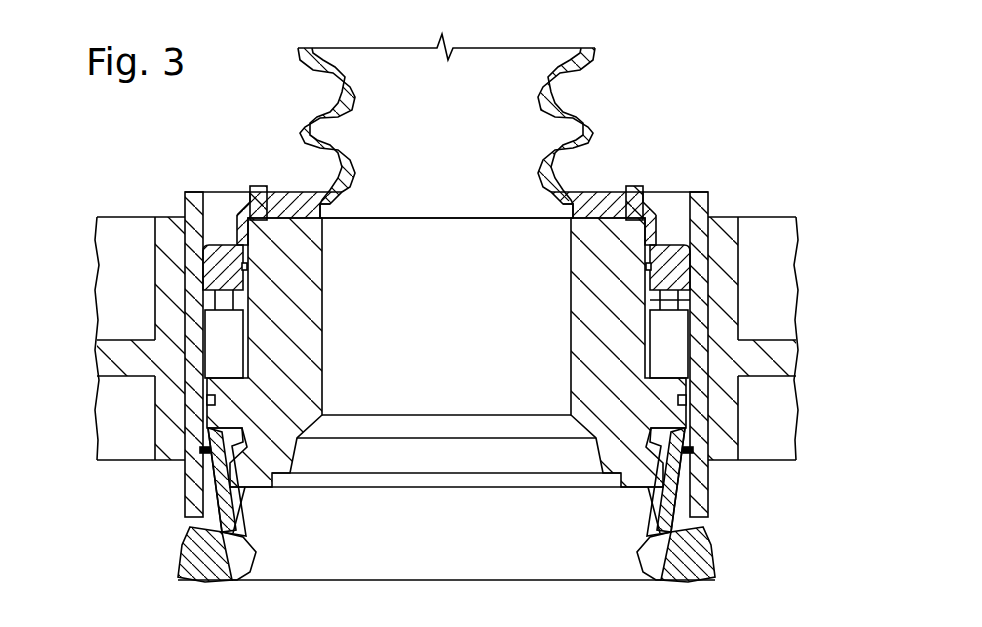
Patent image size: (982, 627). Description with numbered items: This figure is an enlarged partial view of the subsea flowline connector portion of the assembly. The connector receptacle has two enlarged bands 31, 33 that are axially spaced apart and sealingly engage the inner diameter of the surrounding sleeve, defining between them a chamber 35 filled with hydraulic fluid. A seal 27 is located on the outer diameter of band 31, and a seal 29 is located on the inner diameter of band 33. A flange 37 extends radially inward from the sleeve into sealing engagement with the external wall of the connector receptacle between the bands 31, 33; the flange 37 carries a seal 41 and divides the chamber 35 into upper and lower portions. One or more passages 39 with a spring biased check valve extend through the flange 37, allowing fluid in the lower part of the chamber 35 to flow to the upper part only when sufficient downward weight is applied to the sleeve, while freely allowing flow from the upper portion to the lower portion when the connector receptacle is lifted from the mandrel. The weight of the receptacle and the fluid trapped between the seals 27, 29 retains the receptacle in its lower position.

The seal 27 is at (688, 403).
The seal 29 is at (650, 264).
The enlarged band 31 is at (645, 403).
The enlarged band 33 is at (700, 258).
The chamber 35 is at (670, 337).
The flange 37 is at (212, 323).
The passage 39 is at (226, 306).
The seal 41 is at (652, 300).